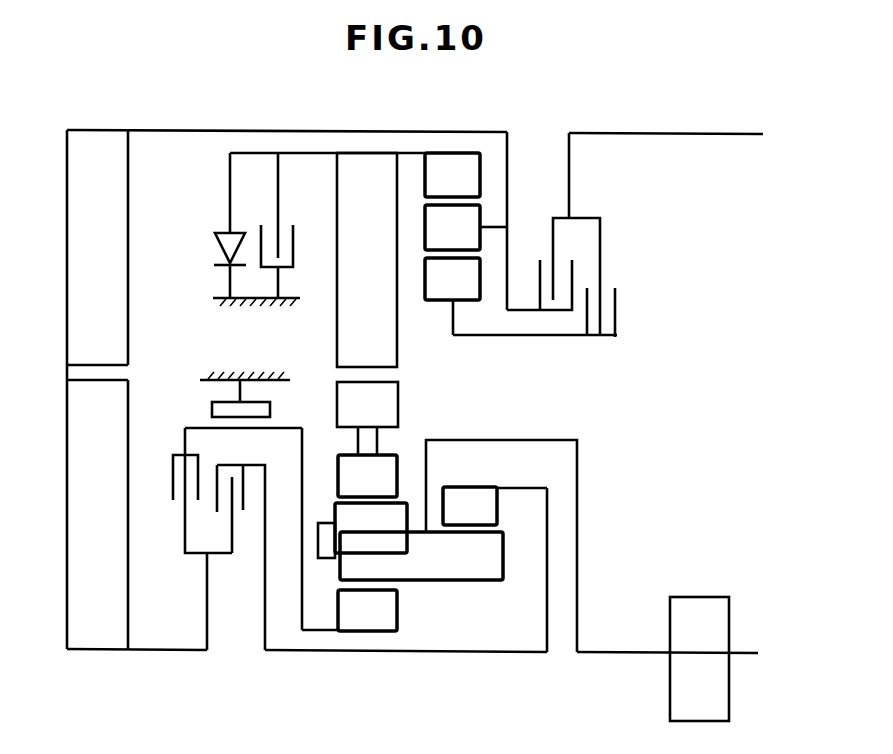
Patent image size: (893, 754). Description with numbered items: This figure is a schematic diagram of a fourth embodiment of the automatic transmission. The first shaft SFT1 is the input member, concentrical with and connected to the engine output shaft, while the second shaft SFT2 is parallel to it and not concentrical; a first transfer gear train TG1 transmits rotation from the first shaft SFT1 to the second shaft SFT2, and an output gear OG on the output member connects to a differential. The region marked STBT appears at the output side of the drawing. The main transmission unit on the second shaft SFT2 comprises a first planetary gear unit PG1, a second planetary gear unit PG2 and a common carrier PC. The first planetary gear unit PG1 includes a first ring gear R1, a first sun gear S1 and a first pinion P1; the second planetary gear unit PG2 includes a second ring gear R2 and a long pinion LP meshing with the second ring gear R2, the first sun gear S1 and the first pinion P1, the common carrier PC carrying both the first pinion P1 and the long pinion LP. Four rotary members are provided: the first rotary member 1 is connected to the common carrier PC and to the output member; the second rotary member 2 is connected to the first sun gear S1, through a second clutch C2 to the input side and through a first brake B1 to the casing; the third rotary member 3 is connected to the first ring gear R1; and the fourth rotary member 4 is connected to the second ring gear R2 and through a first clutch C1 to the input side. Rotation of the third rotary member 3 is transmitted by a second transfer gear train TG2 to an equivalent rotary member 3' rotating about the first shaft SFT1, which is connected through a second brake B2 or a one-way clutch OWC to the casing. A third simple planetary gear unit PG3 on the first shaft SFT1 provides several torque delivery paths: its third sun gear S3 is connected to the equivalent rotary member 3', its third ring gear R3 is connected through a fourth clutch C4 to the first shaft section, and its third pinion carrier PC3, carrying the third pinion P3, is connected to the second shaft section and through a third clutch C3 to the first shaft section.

The first transfer gear train TG1 is at (72, 390).
The second transfer gear train TG2 is at (393, 304).
The one-way clutch OWC is at (232, 229).
The first brake B1 is at (249, 396).
The second brake B2 is at (288, 225).
The first clutch C1 is at (243, 539).
The second clutch C2 is at (191, 539).
The third clutch C3 is at (553, 276).
The fourth clutch C4 is at (616, 312).
The first planetary gear unit PG1 is at (407, 674).
The second planetary gear unit PG2 is at (512, 674).
The third simple planetary gear unit PG3 is at (483, 108).
The first sun gear S1 is at (367, 610).
The first pinion P1 is at (362, 530).
The first ring gear R1 is at (367, 476).
The second ring gear R2 is at (495, 569).
The third sun gear S3 is at (452, 175).
The third pinion P3 is at (466, 227).
The third ring gear R3 is at (452, 279).
The common carrier PC is at (428, 463).
The third pinion carrier PC3 is at (497, 228).
The long pinion LP is at (421, 556).
The first shaft SFT1 is at (513, 130).
The second shaft SFT2 is at (262, 653).
The stub shaft STBT is at (619, 657).
The output gear OG is at (693, 594).
The first rotary member 1 is at (542, 438).
The second rotary member 2 is at (305, 458).
The third rotary member 3 is at (431, 419).
The equivalent rotary member 3' is at (302, 110).
The fourth rotary member 4 is at (544, 617).